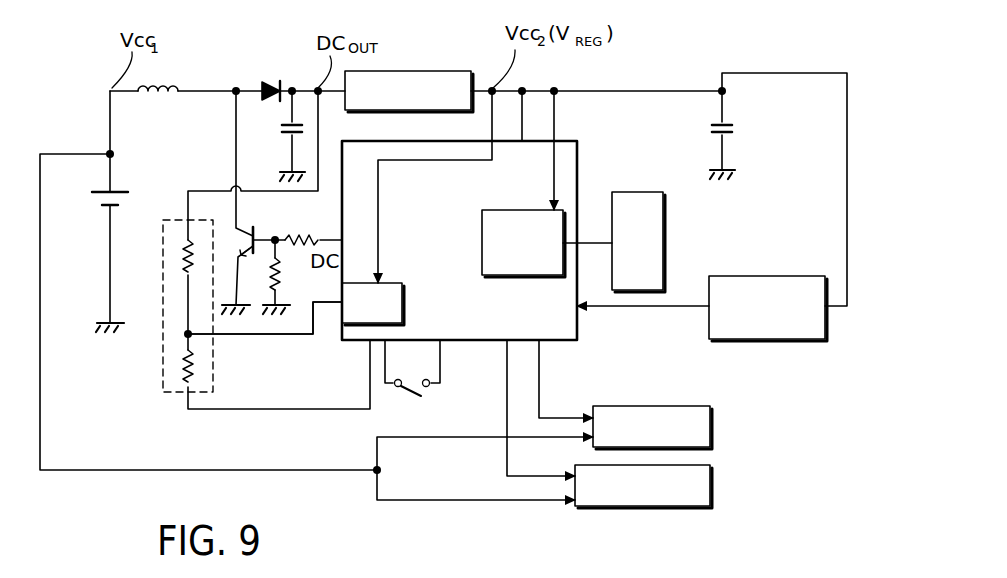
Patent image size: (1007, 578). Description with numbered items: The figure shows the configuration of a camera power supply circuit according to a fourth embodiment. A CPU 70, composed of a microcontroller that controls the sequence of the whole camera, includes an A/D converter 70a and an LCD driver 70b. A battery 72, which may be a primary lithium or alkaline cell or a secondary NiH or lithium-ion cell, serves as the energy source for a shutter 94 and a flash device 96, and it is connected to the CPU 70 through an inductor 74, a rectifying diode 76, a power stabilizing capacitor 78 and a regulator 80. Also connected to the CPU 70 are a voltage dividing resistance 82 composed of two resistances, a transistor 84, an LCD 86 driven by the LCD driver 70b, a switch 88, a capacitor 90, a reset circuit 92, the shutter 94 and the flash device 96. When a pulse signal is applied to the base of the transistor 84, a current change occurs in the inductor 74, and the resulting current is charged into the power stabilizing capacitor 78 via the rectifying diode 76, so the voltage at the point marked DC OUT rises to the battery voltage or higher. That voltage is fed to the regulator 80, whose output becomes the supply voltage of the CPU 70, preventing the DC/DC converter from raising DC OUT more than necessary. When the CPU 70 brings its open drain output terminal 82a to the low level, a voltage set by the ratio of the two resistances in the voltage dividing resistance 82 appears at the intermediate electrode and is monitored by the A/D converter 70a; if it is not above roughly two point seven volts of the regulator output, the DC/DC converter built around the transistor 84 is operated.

The CPU 70 is at (567, 341).
The A/D converter 70a is at (404, 310).
The LCD driver 70b is at (530, 276).
The battery 72 is at (92, 203).
The inductor 74 is at (180, 86).
The rectifying diode 76 is at (272, 82).
The power stabilizing capacitor 78 is at (277, 130).
The regulator 80 is at (432, 70).
The voltage dividing resistance 82 is at (160, 377).
The open drain output terminal 82a is at (368, 342).
The transistor 84 is at (262, 228).
The LCD 86 is at (666, 222).
The switch 88 is at (398, 388).
The capacitor 90 is at (740, 128).
The reset circuit 92 is at (793, 276).
The shutter 94 is at (714, 430).
The flash device 96 is at (714, 490).